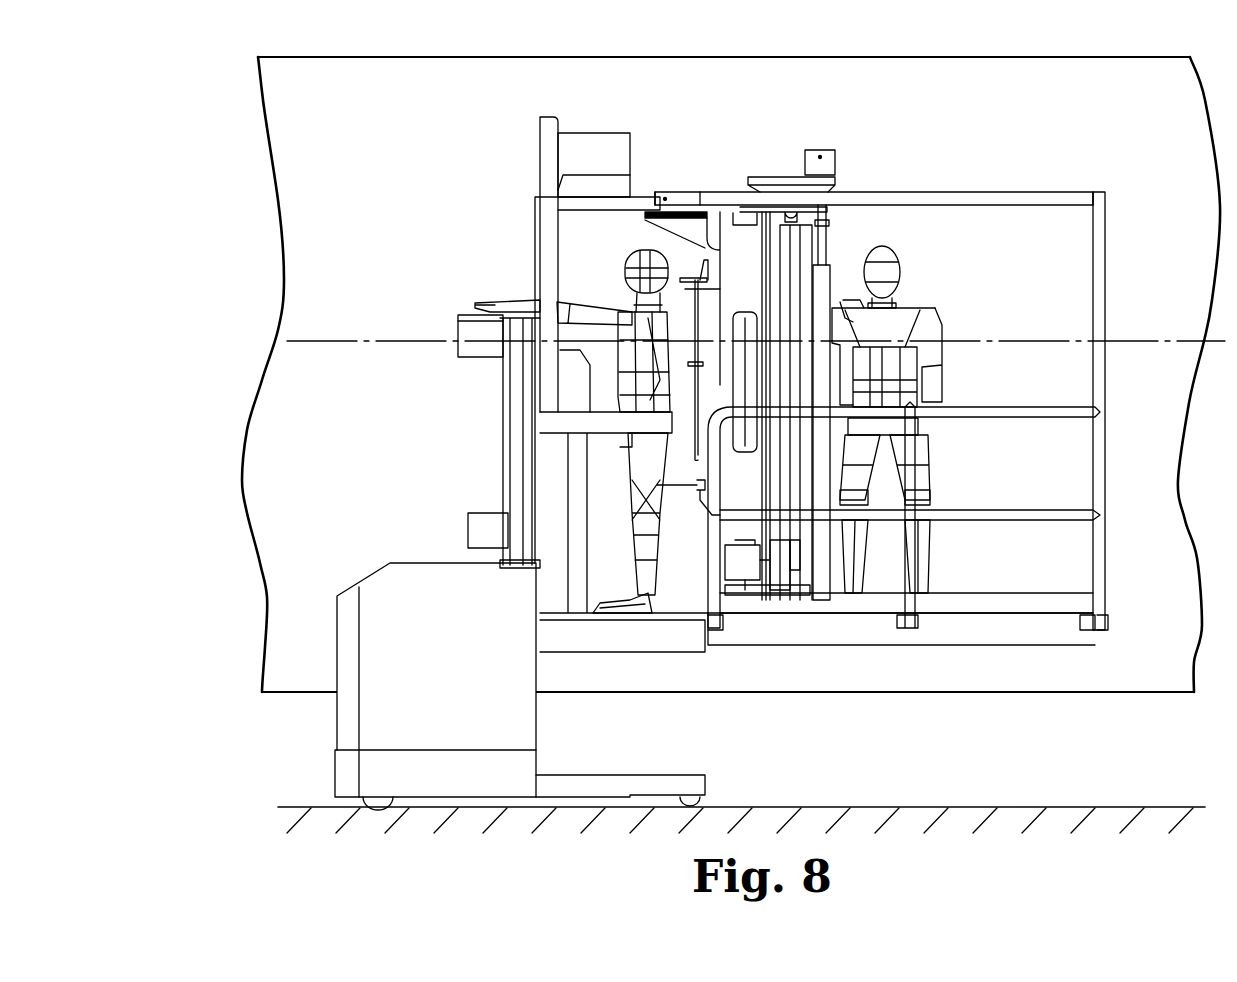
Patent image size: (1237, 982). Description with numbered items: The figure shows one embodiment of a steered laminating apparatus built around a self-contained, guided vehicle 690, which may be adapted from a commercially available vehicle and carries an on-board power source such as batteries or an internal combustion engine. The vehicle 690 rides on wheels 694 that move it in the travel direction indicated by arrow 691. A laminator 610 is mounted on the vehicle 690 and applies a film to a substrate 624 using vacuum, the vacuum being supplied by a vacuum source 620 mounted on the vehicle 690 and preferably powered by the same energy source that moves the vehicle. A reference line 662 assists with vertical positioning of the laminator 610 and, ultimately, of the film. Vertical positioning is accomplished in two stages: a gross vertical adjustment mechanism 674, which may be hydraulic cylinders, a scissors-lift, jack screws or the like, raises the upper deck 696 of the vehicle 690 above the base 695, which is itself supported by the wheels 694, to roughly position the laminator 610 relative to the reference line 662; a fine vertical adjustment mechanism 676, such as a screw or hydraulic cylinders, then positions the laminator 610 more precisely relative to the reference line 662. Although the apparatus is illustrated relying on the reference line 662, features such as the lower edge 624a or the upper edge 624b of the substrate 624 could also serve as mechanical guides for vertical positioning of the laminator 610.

The laminator 610 is at (858, 237).
The vacuum source 620 is at (582, 134).
The substrate 624 is at (443, 165).
The lower edge 624a is at (628, 692).
The upper edge 624b is at (428, 57).
The reference line 662 is at (352, 339).
The gross vertical adjustment mechanism 674 is at (492, 440).
The fine vertical adjustment mechanism 676 is at (690, 262).
The self-contained guided vehicle 690 is at (322, 715).
The arrow indicating travel direction 691 is at (618, 840).
The wheels 694 is at (390, 803).
The base 695 is at (650, 775).
The upper deck 696 is at (977, 633).